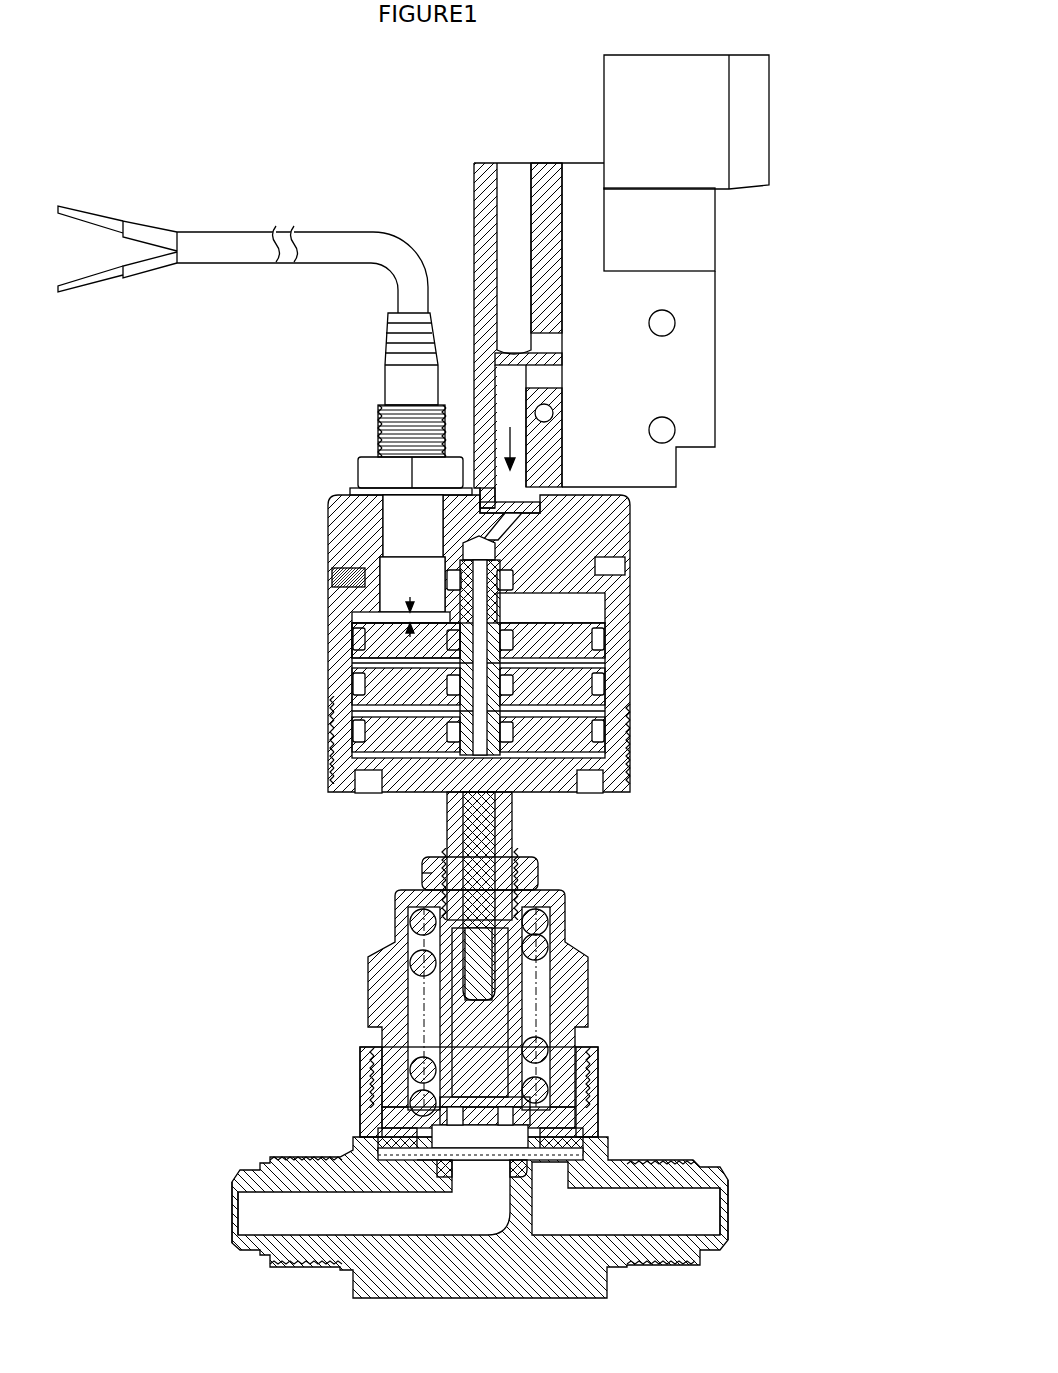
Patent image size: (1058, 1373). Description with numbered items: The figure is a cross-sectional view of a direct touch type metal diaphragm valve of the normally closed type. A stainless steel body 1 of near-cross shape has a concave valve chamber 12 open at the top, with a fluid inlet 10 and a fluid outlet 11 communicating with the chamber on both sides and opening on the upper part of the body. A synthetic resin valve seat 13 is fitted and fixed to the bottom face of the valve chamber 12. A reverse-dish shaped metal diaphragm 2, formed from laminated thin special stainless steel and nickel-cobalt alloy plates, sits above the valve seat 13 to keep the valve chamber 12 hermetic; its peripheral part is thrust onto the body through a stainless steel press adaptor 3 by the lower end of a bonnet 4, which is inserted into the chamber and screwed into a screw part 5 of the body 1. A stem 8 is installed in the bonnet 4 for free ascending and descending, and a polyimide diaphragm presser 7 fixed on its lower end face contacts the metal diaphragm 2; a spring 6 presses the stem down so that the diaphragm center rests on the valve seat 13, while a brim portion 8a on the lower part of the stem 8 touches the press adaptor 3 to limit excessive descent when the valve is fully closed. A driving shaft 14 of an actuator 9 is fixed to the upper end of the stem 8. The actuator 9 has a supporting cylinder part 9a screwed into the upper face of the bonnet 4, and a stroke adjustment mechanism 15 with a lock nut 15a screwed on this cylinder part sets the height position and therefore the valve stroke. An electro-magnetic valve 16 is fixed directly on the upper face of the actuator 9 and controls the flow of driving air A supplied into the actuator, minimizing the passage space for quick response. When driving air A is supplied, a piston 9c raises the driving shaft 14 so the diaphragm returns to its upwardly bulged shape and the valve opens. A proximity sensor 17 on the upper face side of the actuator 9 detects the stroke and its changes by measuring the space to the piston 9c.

The body 1 is at (480, 1275).
The metal diaphragm 2 is at (412, 1160).
The press adaptor 3 is at (568, 1140).
The bonnet 4 is at (575, 990).
The screw part 5 is at (573, 1063).
The spring 6 is at (538, 945).
The diaphragm presser 7 is at (508, 1137).
The stem 8 is at (472, 1032).
The brim portion 8a is at (415, 1120).
The actuator 9 is at (630, 528).
The supporting cylinder part 9a is at (452, 825).
The piston 9c is at (380, 640).
The fluid inlet 10 is at (248, 1215).
The fluid outlet 11 is at (700, 1212).
The valve chamber 12 is at (422, 1165).
The valve seat 13 is at (452, 1170).
The driving shaft 14 is at (482, 828).
The stroke adjustment mechanism 15 is at (545, 875).
The lock nut 15a is at (432, 873).
The electro-magnetic valve 16 is at (715, 360).
The proximity sensor 17 is at (408, 567).
The driving fluid (air) A is at (512, 448).